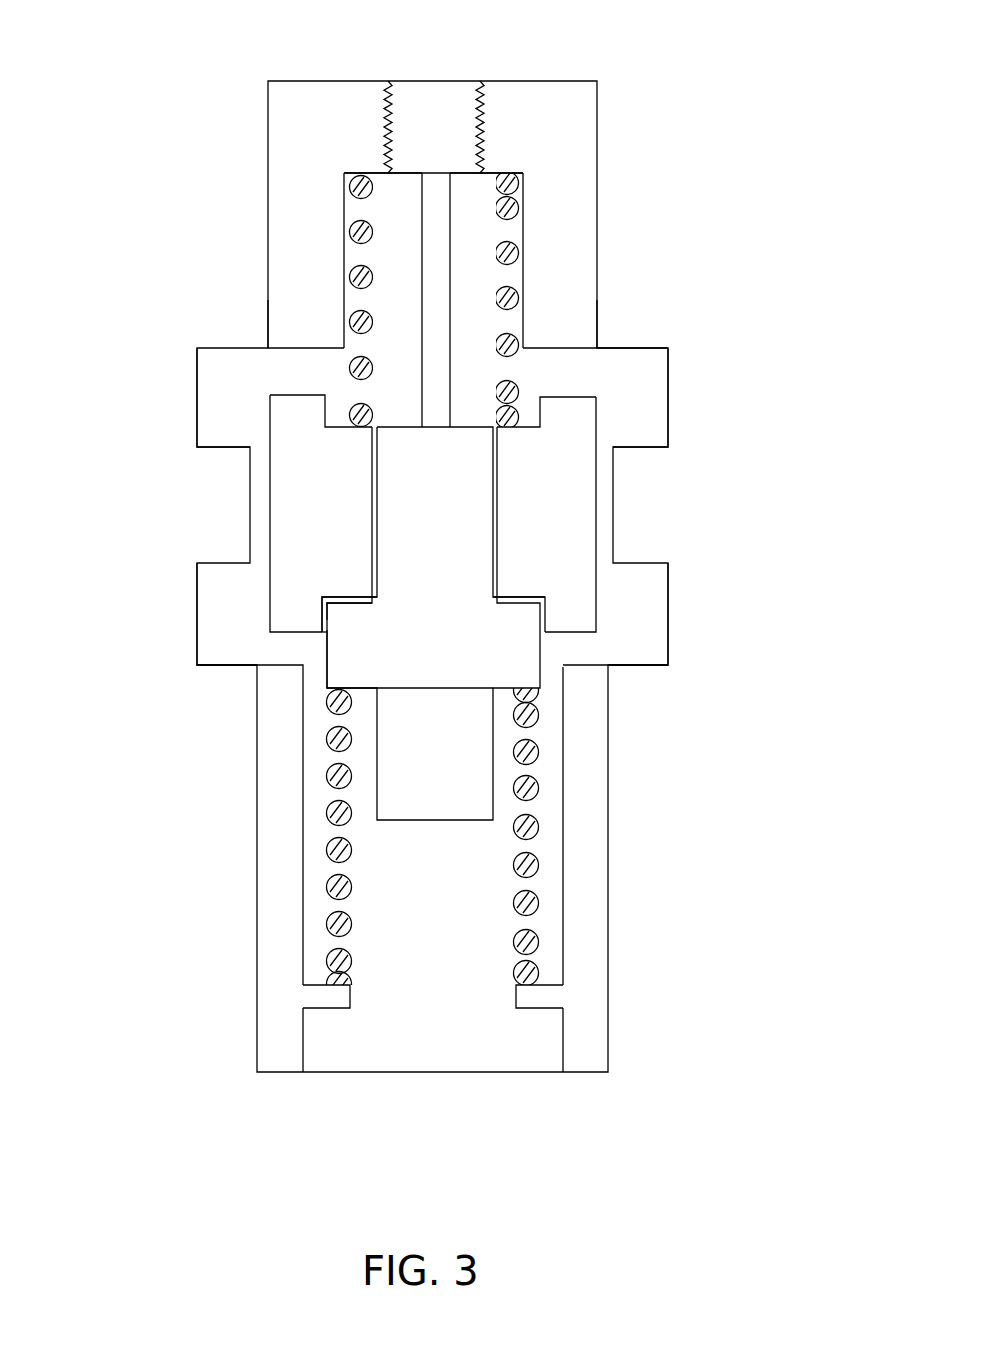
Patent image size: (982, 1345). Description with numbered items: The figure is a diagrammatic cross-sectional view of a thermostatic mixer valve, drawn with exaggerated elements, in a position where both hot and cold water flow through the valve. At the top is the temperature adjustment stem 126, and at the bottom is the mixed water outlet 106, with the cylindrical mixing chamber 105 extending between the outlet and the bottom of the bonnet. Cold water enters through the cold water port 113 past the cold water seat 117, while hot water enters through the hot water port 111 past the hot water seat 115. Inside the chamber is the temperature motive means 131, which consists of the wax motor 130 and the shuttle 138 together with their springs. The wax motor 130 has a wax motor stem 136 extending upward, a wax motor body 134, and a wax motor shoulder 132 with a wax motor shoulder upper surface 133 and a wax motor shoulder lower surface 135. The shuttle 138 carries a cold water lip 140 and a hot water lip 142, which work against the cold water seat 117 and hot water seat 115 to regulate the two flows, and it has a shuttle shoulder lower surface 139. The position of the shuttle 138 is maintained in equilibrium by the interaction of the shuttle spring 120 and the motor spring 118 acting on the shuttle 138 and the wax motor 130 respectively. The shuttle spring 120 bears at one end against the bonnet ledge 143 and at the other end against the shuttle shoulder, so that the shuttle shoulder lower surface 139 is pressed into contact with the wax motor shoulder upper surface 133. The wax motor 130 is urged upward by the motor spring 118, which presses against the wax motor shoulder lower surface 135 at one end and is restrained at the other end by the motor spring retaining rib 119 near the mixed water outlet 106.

The mixing chamber 105 is at (555, 217).
The mixed water outlet 106 is at (440, 1055).
The hot water port 111 is at (232, 603).
The cold water port 113 is at (223, 402).
The hot water seat 115 is at (252, 670).
The cold water seat 117 is at (268, 347).
The motor spring 118 is at (327, 883).
The motor spring retaining rib 119 is at (325, 996).
The shuttle spring 120 is at (350, 276).
The temperature adjustment stem 126 is at (417, 81).
The wax motor 130 is at (440, 697).
The temperature motive means 131 is at (455, 546).
The wax motor shoulder 132 is at (343, 427).
The wax motor shoulder upper surface 133 is at (353, 608).
The wax motor body 134 is at (458, 627).
The wax motor shoulder lower surface 135 is at (337, 679).
The wax motor stem 136 is at (422, 225).
The shuttle 138 is at (295, 525).
The shuttle shoulder lower surface 139 is at (341, 596).
The cold water lip 140 is at (268, 395).
The hot water lip 142 is at (347, 650).
The bonnet ledge 143 is at (372, 173).